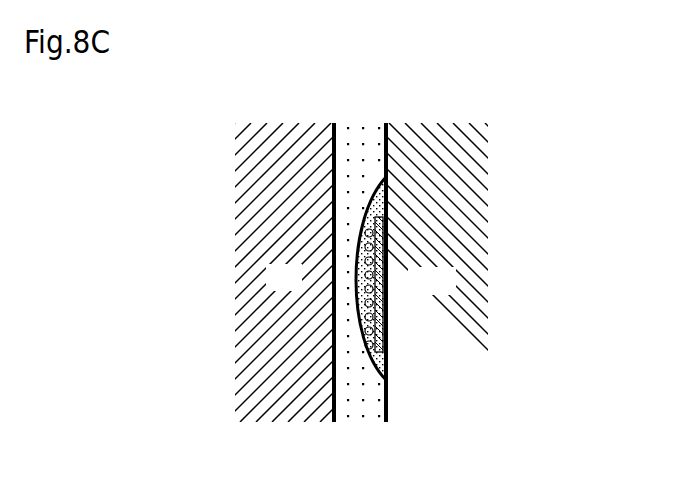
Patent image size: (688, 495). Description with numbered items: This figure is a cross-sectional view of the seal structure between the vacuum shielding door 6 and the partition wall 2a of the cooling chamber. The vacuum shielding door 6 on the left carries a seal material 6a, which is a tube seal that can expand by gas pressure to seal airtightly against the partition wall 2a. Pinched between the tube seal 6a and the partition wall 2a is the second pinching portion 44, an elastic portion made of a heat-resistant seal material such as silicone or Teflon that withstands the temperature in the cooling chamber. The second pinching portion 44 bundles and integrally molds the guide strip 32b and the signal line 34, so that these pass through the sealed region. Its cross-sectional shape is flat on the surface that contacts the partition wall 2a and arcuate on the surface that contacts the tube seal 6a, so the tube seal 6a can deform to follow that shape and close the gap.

The vacuum shielding door 6 is at (252, 207).
The seal material 6a is at (358, 145).
The second pinching portion 44 is at (385, 202).
The signal line 34 is at (361, 311).
The guide strip 32b is at (385, 303).
The partition wall 2a is at (457, 360).